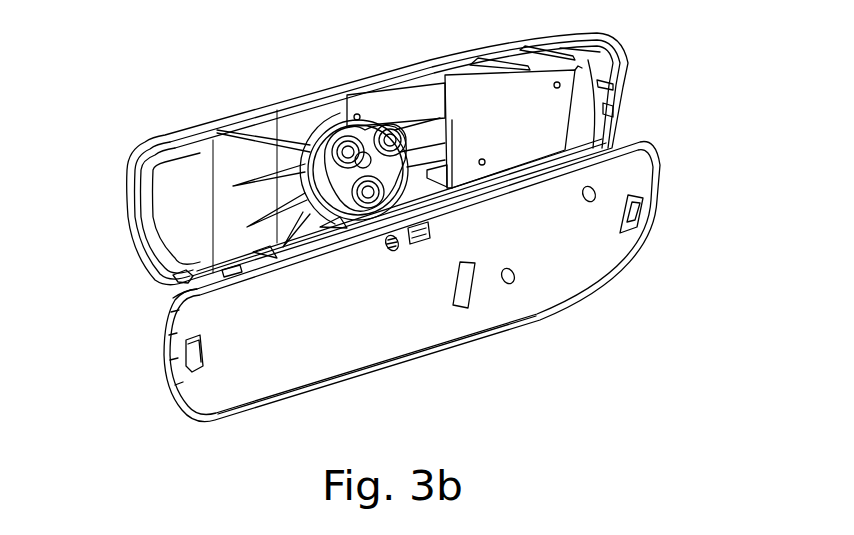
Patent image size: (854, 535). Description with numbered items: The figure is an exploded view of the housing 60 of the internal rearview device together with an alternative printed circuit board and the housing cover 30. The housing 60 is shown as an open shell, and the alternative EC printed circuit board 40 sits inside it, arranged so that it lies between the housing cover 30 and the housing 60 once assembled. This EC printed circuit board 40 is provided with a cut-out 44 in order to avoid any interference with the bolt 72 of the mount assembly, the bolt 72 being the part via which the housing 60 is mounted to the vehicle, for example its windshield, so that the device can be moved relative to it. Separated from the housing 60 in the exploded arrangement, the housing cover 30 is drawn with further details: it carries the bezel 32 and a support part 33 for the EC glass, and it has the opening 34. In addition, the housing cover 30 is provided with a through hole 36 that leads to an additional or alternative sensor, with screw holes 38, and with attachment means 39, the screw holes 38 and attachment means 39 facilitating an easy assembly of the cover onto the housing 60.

The housing cover 30 is at (173, 298).
The bezel 32 is at (373, 380).
The support part 33 is at (252, 380).
The opening 34 is at (470, 300).
The through hole 36 is at (395, 256).
The screw holes 38 is at (596, 191).
The attachment means 39 is at (640, 212).
The EC printed circuit board 40 is at (570, 57).
The cut-out 44 is at (427, 122).
The housing 60 is at (165, 140).
The bolt 72 is at (372, 153).